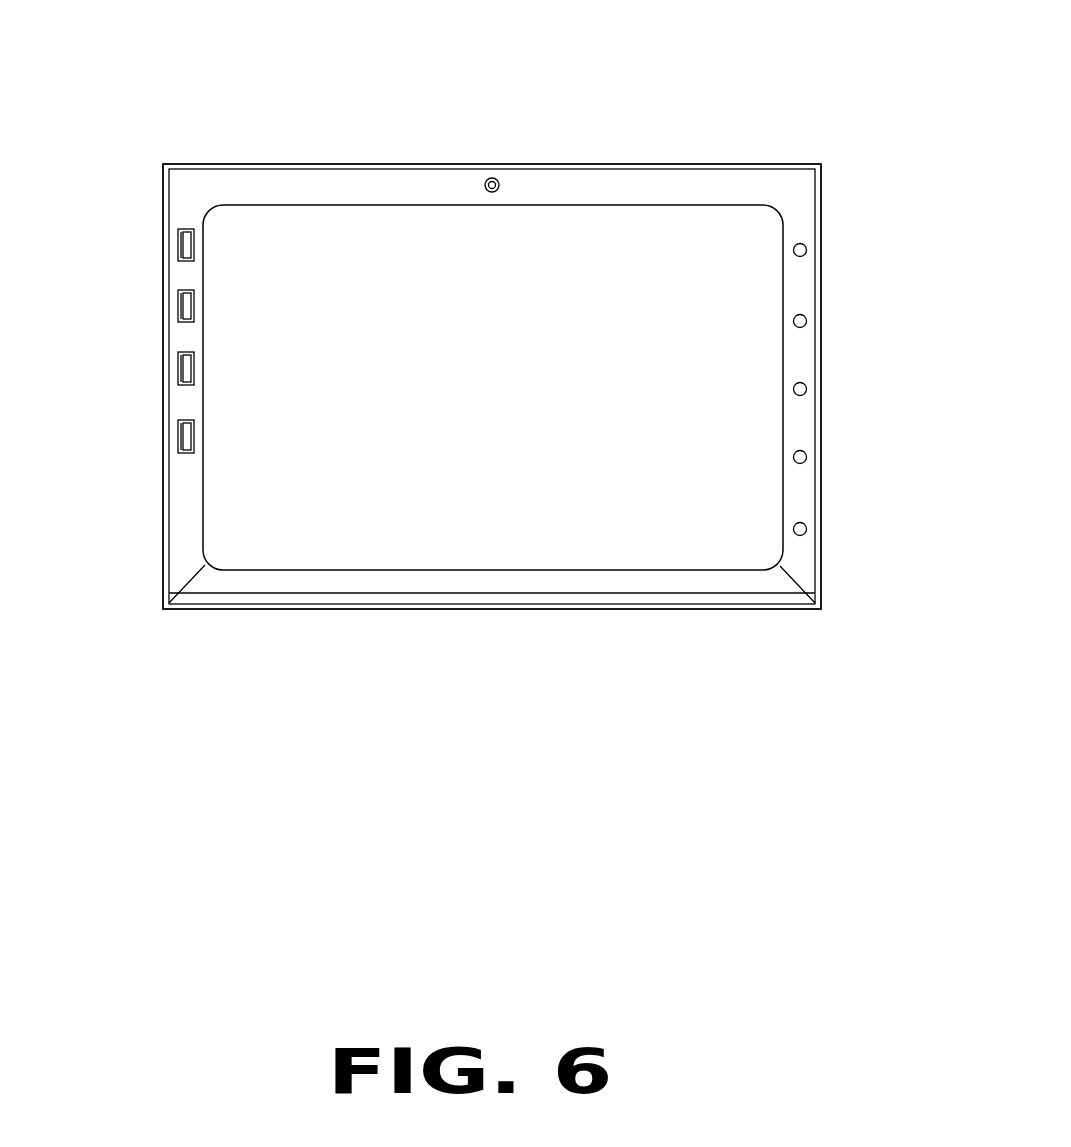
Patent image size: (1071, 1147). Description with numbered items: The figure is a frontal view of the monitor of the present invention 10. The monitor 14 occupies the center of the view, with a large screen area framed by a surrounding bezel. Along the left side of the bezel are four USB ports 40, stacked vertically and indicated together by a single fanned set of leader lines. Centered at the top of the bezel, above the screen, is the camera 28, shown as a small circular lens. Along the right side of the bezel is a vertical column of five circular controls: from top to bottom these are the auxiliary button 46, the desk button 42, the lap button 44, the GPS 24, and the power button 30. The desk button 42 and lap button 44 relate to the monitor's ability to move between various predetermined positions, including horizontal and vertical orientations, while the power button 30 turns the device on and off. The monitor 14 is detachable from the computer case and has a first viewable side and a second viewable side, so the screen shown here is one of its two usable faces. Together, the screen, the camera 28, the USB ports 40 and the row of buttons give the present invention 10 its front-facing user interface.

The present invention 10 is at (817, 118).
The monitor 14 is at (605, 255).
The GPS 24 is at (807, 457).
The camera 28 is at (491, 177).
The power button 30 is at (807, 529).
The USB ports 40 is at (178, 250).
The desk button 42 is at (807, 321).
The lap button 44 is at (807, 389).
The auxiliary button 46 is at (807, 250).